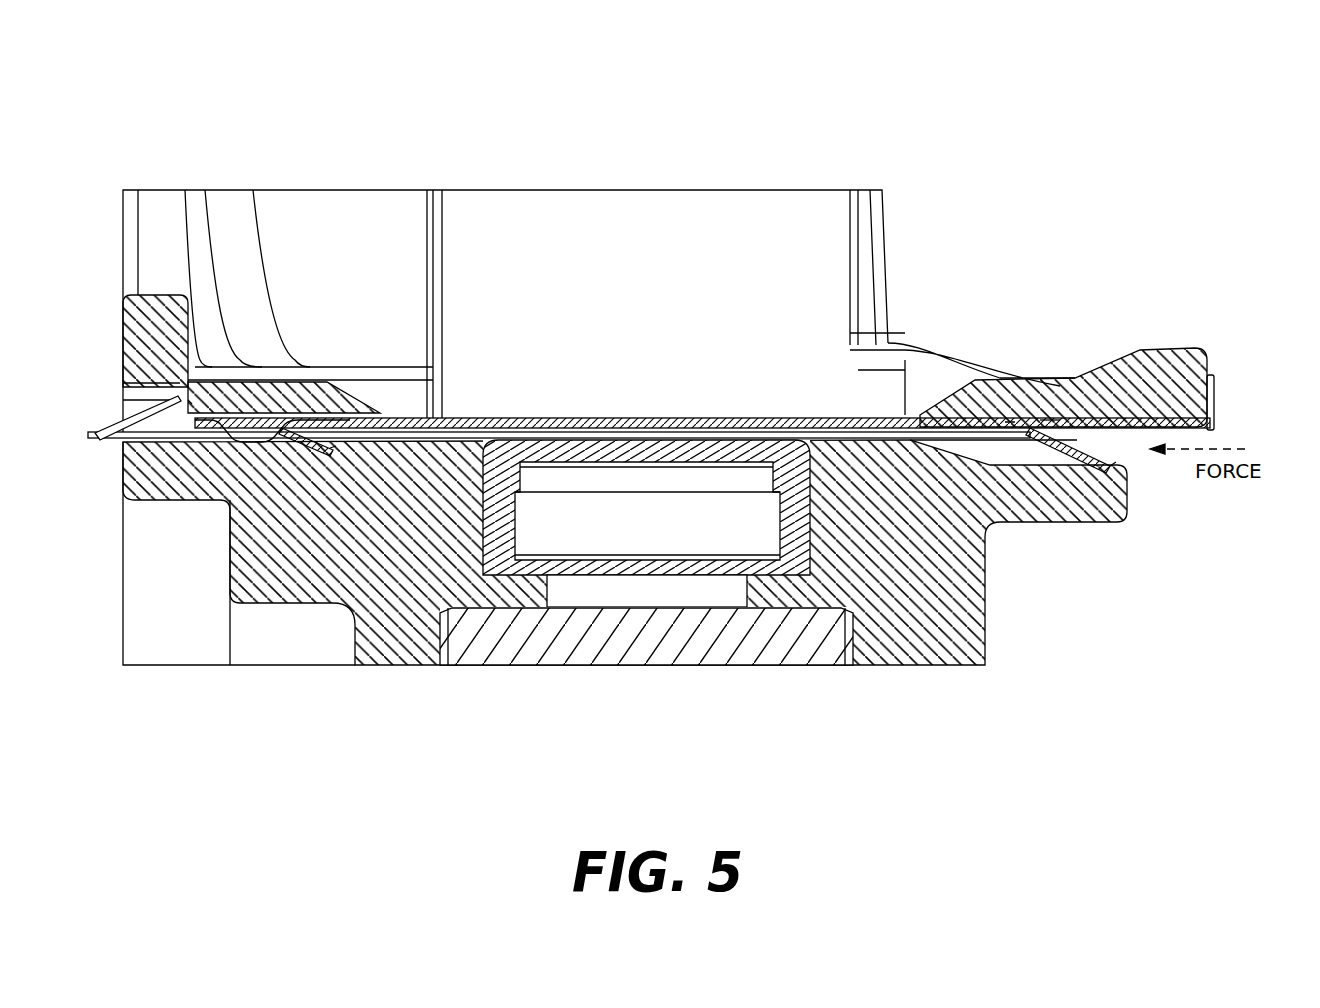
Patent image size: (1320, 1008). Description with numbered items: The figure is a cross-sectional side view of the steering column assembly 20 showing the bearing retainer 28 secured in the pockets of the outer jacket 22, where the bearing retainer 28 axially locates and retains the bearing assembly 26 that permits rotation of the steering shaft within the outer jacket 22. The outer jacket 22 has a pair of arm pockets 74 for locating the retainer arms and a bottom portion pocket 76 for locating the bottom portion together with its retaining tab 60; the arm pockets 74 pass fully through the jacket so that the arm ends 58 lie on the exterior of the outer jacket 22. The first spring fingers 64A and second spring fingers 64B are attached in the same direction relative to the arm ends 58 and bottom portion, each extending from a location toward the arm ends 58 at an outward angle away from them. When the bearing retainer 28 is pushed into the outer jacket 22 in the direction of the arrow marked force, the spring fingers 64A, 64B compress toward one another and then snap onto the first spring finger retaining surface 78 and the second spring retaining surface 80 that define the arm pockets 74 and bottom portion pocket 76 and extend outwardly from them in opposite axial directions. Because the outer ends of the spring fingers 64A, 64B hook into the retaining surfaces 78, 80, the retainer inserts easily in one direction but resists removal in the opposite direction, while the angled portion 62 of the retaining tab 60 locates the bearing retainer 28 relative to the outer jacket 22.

The steering column assembly 20 is at (1152, 100).
The outer jacket 22 is at (897, 214).
The bearing assembly 26 is at (733, 582).
The bearing retainer 28 is at (705, 410).
The arm ends 58 is at (95, 440).
The retaining tab 60 is at (1125, 420).
The angled portion 62 is at (1215, 405).
The first spring finger 64A is at (178, 405).
The second spring finger 64B is at (300, 432).
The arm pockets 74 is at (340, 425).
The bottom portion pocket 76 is at (1050, 425).
The first spring finger retaining surface 78 is at (188, 400).
The second spring retaining surface 80 is at (330, 450).